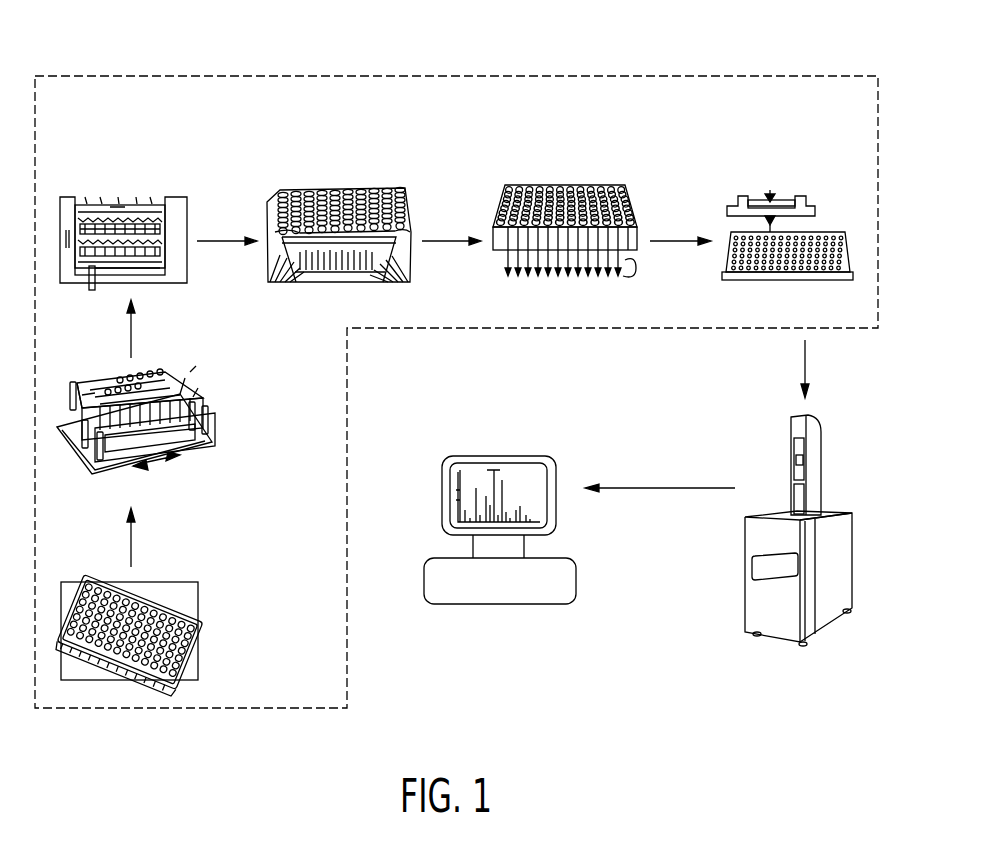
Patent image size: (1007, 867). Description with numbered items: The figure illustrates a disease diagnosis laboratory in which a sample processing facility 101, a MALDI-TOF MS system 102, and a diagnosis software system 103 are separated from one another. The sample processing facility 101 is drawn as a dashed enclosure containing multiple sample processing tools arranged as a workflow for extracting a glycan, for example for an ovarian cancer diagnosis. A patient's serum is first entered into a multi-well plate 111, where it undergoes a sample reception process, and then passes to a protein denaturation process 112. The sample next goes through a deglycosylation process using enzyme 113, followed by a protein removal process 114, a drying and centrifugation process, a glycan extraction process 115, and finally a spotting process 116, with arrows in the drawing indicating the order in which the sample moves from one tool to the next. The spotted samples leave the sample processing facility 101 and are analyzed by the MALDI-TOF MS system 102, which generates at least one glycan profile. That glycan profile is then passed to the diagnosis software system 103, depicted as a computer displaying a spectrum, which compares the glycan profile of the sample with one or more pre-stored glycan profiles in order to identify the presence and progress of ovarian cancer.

The sample processing facility 101 is at (662, 76).
The MALDI-TOF MS system 102 is at (821, 462).
The diagnosis software system 103 is at (576, 583).
The multi-well plate 111 is at (200, 632).
The protein denaturation process 112 is at (207, 440).
The deglycosylation process using enzyme 113 is at (132, 190).
The protein removal process 114 is at (350, 185).
The glycan extraction process 115 is at (572, 185).
The spotting process 116 is at (782, 190).